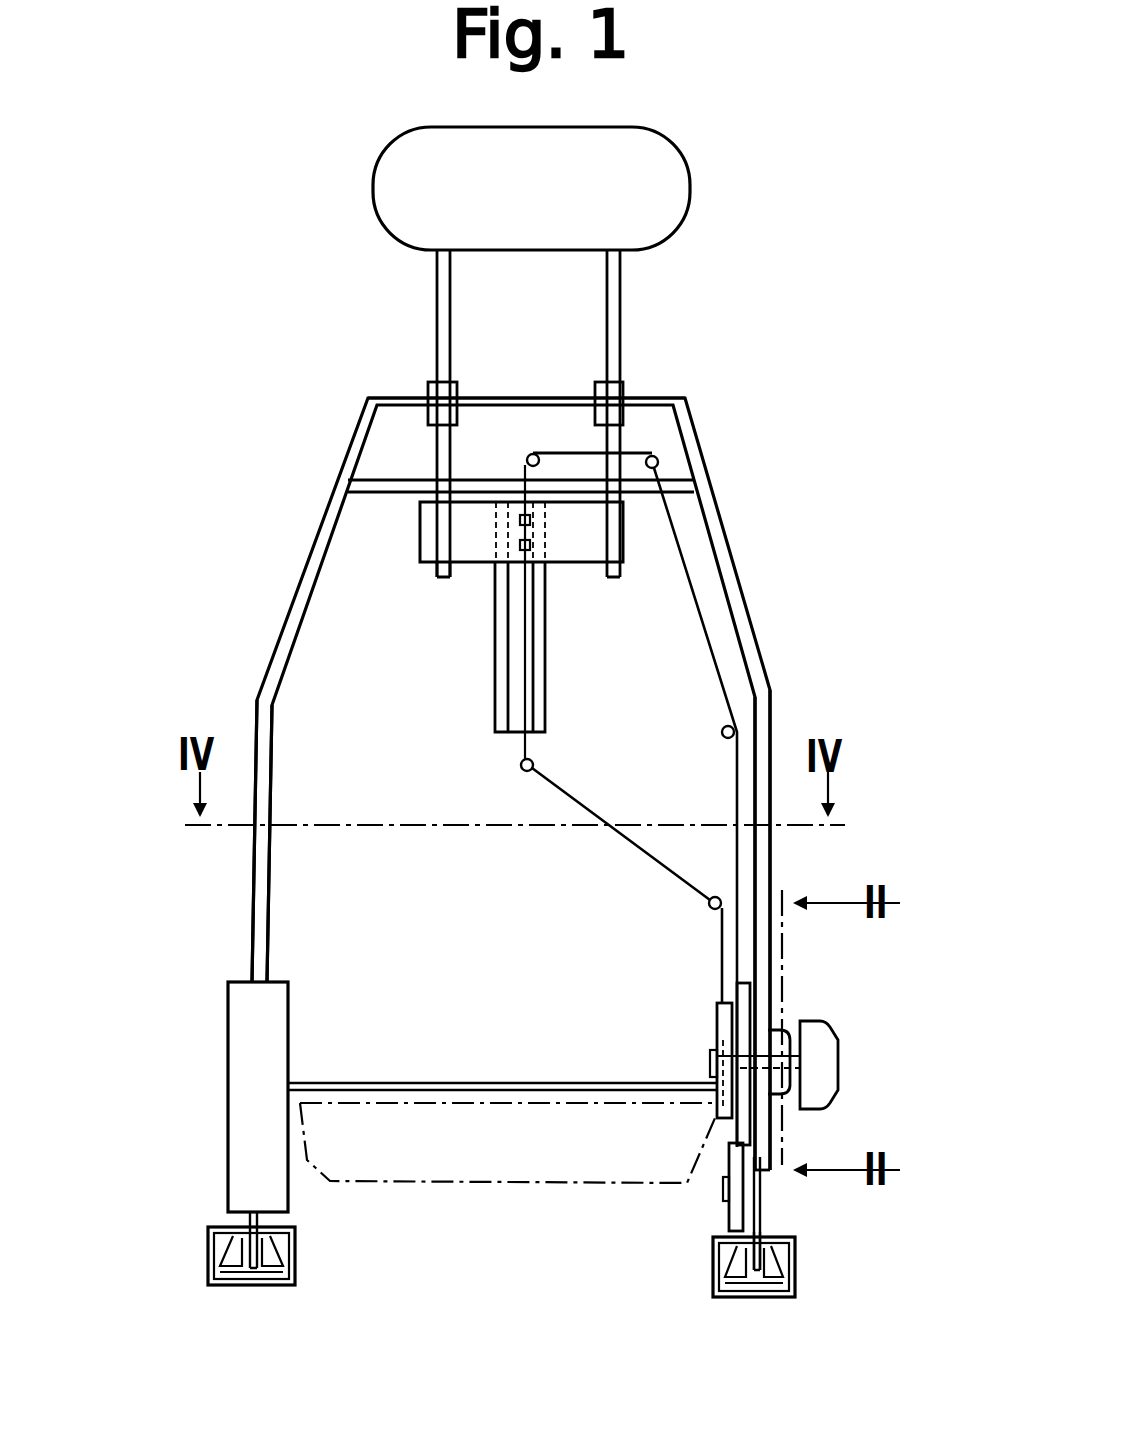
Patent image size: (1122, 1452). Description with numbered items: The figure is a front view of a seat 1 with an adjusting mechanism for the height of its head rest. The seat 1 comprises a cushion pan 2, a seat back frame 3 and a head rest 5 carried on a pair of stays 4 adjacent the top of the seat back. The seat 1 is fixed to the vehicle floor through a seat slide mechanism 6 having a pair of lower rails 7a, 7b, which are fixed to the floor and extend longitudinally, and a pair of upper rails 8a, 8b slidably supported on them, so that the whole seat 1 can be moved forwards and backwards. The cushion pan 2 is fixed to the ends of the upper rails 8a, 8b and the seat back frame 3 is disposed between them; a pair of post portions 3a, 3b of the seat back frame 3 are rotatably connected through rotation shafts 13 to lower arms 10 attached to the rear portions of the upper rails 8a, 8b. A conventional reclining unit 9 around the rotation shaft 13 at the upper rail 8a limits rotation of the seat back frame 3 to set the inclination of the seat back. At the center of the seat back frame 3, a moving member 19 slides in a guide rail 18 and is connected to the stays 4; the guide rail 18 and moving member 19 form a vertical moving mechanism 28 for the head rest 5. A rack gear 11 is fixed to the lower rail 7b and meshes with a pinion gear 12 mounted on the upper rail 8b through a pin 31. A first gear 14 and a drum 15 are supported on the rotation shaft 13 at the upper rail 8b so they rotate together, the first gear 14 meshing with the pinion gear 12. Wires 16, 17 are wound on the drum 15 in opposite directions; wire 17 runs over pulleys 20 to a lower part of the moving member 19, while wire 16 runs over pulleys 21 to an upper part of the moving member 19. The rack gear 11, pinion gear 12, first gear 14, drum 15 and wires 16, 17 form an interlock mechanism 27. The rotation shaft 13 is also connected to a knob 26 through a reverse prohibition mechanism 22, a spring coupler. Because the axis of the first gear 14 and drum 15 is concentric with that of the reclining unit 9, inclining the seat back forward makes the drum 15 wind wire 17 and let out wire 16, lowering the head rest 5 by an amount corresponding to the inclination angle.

The seat 1 is at (748, 478).
The cushion pan 2 is at (508, 1148).
The seat back frame 3 is at (293, 562).
The post portion 3a is at (262, 726).
The post portion 3b is at (765, 755).
The stay 4 is at (620, 303).
The head rest 5 is at (690, 208).
The seat slide mechanism 6 is at (204, 1257).
The lower rail 7a is at (292, 1272).
The lower rail 7b is at (792, 1284).
The upper rail 8a is at (270, 1232).
The upper rail 8b is at (765, 1228).
The reclining unit 9 is at (240, 1025).
The lower arm 10 is at (768, 970).
The rack gear 11 is at (745, 1220).
The pinion gear 12 is at (728, 1195).
The rotation shaft 13 is at (796, 1063).
The first gear 14 is at (740, 1092).
The drum 15 is at (716, 1020).
The wire 16 is at (712, 625).
The wire 17 is at (588, 805).
The guide rail 18 is at (496, 675).
The moving member 19 is at (580, 555).
The pulley 20 is at (520, 765).
The pulley 21 is at (533, 452).
The reverse prohibition mechanism 22 is at (776, 1035).
The knob 26 is at (822, 1082).
The interlock mechanism 27 is at (686, 1048).
The vertical moving mechanism 28 is at (466, 582).
The pin 31 is at (768, 1185).